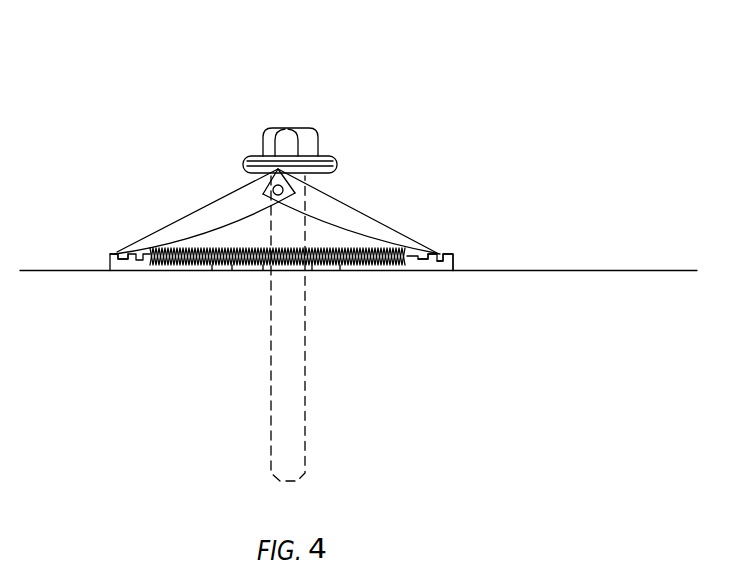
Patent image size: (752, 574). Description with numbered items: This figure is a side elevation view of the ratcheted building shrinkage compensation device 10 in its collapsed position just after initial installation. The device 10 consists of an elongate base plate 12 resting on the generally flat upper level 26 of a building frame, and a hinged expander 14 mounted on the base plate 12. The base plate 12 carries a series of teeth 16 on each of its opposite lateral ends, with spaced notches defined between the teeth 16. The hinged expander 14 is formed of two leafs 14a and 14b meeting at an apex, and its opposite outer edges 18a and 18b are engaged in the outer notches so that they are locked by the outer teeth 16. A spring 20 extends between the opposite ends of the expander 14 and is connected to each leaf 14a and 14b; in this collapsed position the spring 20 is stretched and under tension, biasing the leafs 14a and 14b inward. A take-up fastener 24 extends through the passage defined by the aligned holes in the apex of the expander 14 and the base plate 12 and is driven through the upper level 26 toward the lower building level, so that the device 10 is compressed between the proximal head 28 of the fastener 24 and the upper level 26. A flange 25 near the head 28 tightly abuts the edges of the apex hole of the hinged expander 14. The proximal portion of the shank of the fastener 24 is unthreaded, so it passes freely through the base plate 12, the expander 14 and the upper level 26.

The ratcheted building shrinkage compensation device 10 is at (157, 165).
The elongate base plate 12 is at (412, 272).
The hinged expander 14 is at (311, 152).
The leaf 14a is at (335, 197).
The leaf 14b is at (197, 213).
The teeth 16 is at (455, 255).
The edge 18a is at (437, 255).
The edge 18b is at (115, 253).
The spring 20 is at (213, 271).
The take-up fastener 24 is at (298, 125).
The flange 25 is at (331, 156).
The upper level 26 is at (605, 303).
The proximal head 28 is at (259, 127).